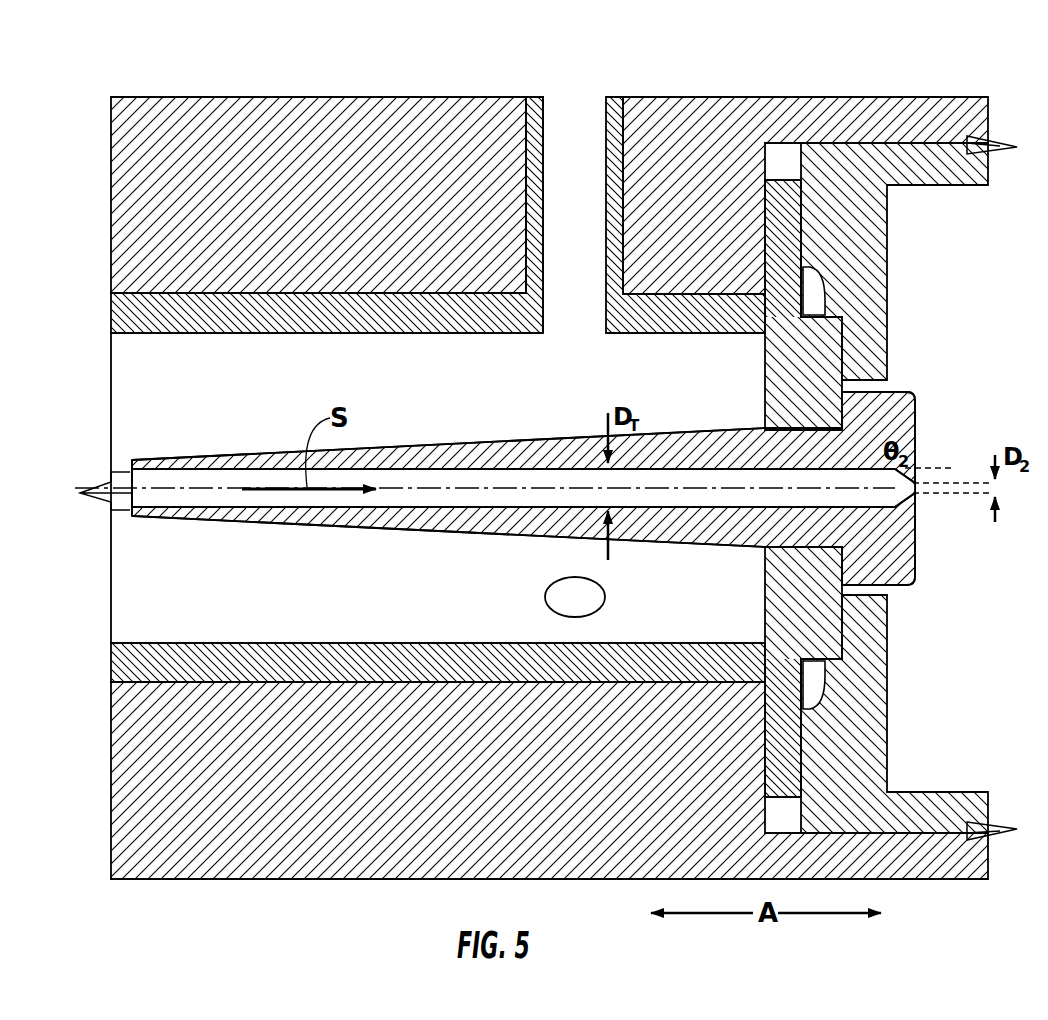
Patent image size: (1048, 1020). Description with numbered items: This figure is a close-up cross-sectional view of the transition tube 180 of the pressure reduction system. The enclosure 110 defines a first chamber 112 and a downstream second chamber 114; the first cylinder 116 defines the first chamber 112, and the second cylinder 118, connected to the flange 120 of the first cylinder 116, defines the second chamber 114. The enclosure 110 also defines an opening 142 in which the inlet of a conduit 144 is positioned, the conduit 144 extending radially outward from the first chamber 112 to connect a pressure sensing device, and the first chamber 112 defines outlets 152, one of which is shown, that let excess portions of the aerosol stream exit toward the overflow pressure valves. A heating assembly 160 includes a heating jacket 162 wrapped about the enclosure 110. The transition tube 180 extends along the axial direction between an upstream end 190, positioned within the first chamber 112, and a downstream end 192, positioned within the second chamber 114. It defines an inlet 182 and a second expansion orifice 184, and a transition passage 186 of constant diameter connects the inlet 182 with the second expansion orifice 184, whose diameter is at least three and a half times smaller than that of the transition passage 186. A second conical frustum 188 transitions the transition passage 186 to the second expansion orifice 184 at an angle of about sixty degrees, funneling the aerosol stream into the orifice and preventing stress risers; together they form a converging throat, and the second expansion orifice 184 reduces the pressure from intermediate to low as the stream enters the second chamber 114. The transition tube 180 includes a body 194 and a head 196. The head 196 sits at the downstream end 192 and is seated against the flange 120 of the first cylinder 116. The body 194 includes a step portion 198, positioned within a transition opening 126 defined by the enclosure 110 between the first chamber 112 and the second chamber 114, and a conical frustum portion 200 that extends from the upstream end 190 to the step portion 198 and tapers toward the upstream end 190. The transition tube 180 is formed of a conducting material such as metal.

The enclosure 110 is at (405, 288).
The first chamber 112 is at (273, 386).
The second chamber 114 is at (950, 245).
The first cylinder 116 is at (218, 315).
The second cylinder 118 is at (840, 177).
The flange 120 is at (777, 213).
The transition opening 126 is at (763, 526).
The opening 142 is at (592, 342).
The conduit 144 is at (527, 118).
The outlets 152 is at (543, 610).
The heating assembly 160 is at (335, 165).
The heating jacket 162 is at (133, 133).
The transition tube 180 is at (515, 414).
The inlet 182 is at (160, 484).
The second expansion orifice 184 is at (917, 506).
The transition passage 186 is at (452, 478).
The second conical frustum 188 is at (902, 516).
The upstream end 190 is at (138, 532).
The downstream end 192 is at (907, 608).
The body 194 is at (512, 542).
The head 196 is at (924, 412).
The step portion 198 is at (805, 428).
The conical frustum portion 200 is at (307, 527).